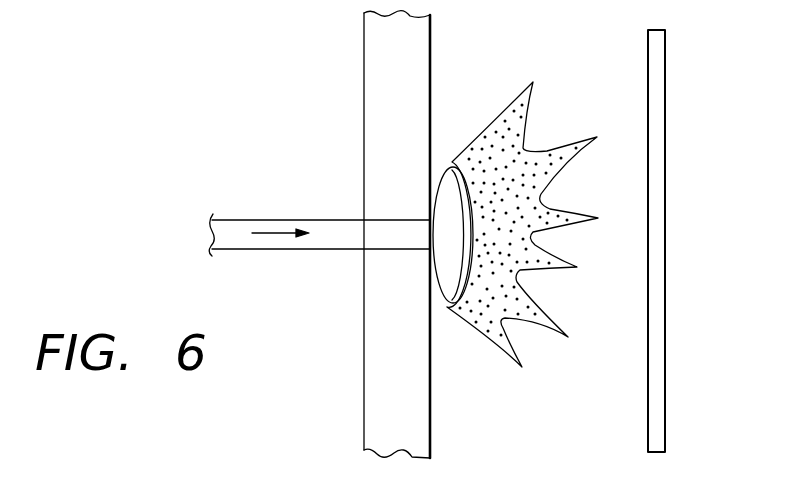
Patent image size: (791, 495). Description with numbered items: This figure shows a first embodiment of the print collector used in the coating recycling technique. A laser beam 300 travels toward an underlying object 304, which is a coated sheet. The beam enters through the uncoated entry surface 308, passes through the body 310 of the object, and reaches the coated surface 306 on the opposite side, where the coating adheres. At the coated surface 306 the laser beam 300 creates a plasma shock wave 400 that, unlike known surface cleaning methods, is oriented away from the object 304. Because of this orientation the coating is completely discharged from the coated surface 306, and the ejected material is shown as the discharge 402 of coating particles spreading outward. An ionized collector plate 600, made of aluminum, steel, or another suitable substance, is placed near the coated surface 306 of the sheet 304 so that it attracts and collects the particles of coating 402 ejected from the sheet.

The laser beam 300 is at (275, 217).
The underlying object 304 is at (431, 45).
The coated surface 306 is at (432, 415).
The entry surface 308 is at (364, 421).
The body 310 is at (387, 52).
The plasma shock wave 400 is at (447, 180).
The discharge 402 is at (569, 141).
The ionized collector plate 600 is at (667, 181).